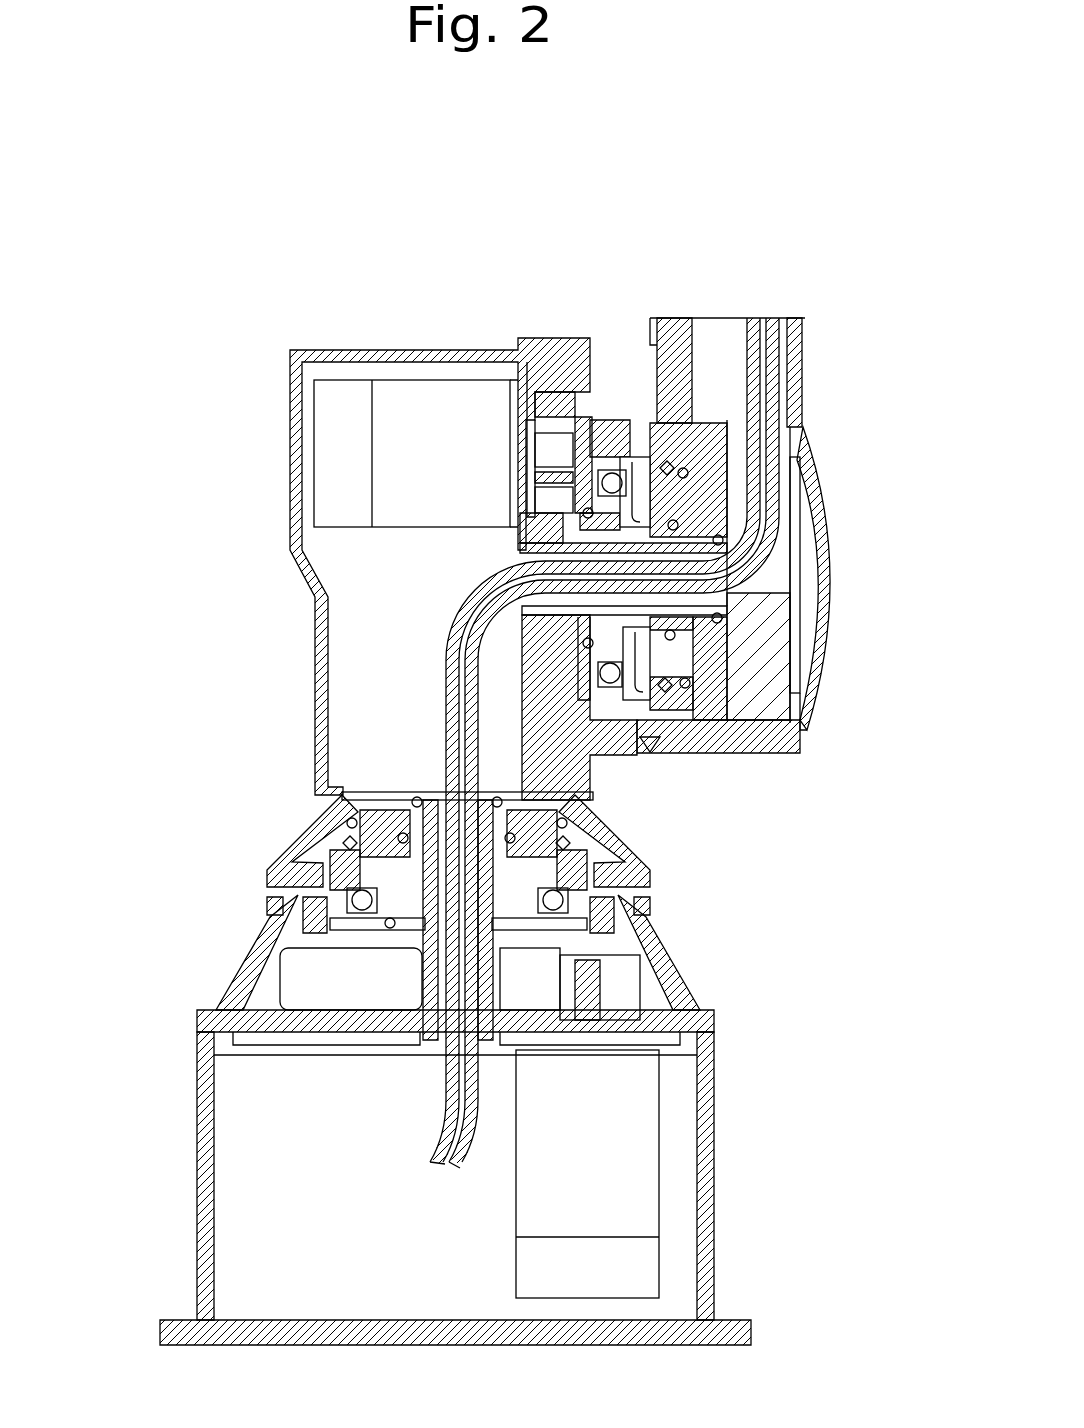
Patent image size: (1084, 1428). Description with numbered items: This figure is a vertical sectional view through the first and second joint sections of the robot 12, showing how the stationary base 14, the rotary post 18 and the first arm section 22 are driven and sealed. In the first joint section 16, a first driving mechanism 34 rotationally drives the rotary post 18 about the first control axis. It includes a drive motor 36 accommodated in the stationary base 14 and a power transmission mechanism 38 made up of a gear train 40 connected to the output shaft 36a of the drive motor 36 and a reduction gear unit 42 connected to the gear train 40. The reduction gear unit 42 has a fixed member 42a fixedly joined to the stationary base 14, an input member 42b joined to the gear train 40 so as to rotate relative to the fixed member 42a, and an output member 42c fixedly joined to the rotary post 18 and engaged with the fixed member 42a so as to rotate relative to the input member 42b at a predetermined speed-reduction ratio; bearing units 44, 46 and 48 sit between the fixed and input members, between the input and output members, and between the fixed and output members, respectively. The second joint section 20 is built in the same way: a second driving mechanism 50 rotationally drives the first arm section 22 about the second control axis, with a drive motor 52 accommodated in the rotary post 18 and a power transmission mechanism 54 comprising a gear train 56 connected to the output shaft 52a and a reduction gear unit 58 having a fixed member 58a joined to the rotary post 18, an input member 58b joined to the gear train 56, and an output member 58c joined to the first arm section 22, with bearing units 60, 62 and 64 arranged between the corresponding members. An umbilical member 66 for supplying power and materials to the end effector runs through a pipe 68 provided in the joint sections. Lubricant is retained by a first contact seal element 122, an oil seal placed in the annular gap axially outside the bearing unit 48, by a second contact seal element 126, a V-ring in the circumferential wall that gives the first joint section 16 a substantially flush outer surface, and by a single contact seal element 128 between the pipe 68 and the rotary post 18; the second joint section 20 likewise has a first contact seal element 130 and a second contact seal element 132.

The robot 12 is at (180, 483).
The stationary base 14 is at (700, 1237).
The first joint section 16 is at (210, 905).
The rotary post 18 is at (318, 645).
The second joint section 20 is at (648, 763).
The first arm section 22 is at (803, 375).
The first driving mechanism 34 is at (870, 895).
The drive motor 36 is at (640, 1107).
The output shaft 36a is at (592, 993).
The power transmission mechanism 38 is at (822, 850).
The gear train 40 is at (630, 937).
The reduction gear unit 42 is at (775, 822).
The fixed member 42a is at (585, 865).
The input member 42b is at (570, 890).
The output member 42c is at (598, 825).
The bearing unit 44 is at (380, 955).
The bearing unit 46 is at (290, 862).
The bearing unit 48 is at (310, 845).
The second driving mechanism 50 is at (618, 188).
The drive motor 52 is at (443, 397).
The output shaft 52a is at (552, 447).
The power transmission mechanism 54 is at (660, 230).
The gear train 56 is at (607, 447).
The reduction gear unit 58 is at (572, 272).
The fixed member 58a is at (673, 493).
The input member 58b is at (628, 452).
The output member 58c is at (692, 467).
The bearing unit 60 is at (760, 668).
The bearing unit 62 is at (650, 638).
The bearing unit 64 is at (800, 730).
The umbilical member 66 is at (442, 725).
The pipe 68 is at (415, 1000).
The first contact seal element 122 is at (345, 815).
The second contact seal element 126 is at (262, 912).
The contact seal element 128 is at (410, 797).
The first contact seal element 130 is at (690, 703).
The second contact seal element 132 is at (655, 742).